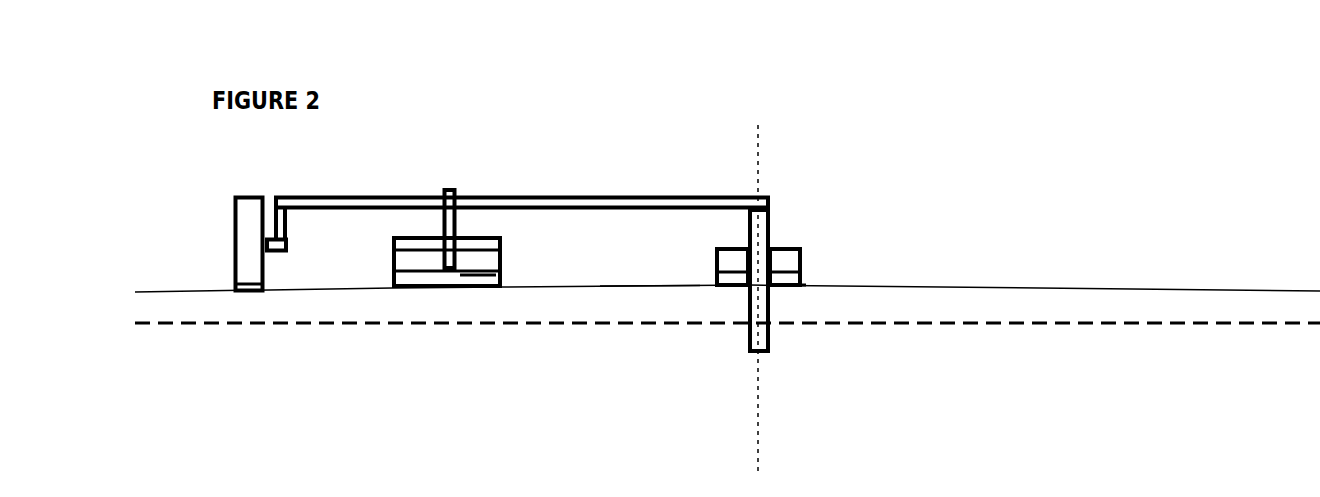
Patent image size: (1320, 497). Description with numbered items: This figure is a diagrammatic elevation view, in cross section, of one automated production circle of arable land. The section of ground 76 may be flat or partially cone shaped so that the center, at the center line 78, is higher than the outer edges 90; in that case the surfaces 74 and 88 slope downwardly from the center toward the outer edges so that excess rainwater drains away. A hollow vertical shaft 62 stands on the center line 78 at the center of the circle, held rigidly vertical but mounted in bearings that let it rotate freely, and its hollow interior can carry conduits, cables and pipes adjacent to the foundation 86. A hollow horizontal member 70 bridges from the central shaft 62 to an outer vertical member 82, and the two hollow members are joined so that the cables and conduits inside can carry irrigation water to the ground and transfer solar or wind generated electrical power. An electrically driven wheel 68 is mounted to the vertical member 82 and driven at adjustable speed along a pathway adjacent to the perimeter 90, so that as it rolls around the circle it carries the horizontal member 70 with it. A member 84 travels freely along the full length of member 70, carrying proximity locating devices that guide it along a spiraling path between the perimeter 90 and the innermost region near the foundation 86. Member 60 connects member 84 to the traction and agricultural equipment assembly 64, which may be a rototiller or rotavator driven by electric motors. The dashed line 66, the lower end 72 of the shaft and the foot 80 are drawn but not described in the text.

The member 60 is at (500, 197).
The hollow vertical shaft 62 is at (768, 235).
The traction and agricultural equipment assembly 64 is at (468, 278).
The ground plane (dashed line) 66 is at (940, 323).
The electrically driven wheel 68 is at (250, 260).
The hollow horizontal member 70 is at (342, 193).
The lower end of post 72 is at (745, 342).
The surface 74 is at (682, 286).
The section of ground 76 is at (414, 307).
The center line 78 is at (758, 148).
The foot 80 is at (288, 245).
The vertical member 82 is at (287, 217).
The member 84 is at (455, 190).
The foundation 86 is at (775, 258).
The surface 88 is at (805, 285).
The outer edges / perimeter 90 is at (290, 292).